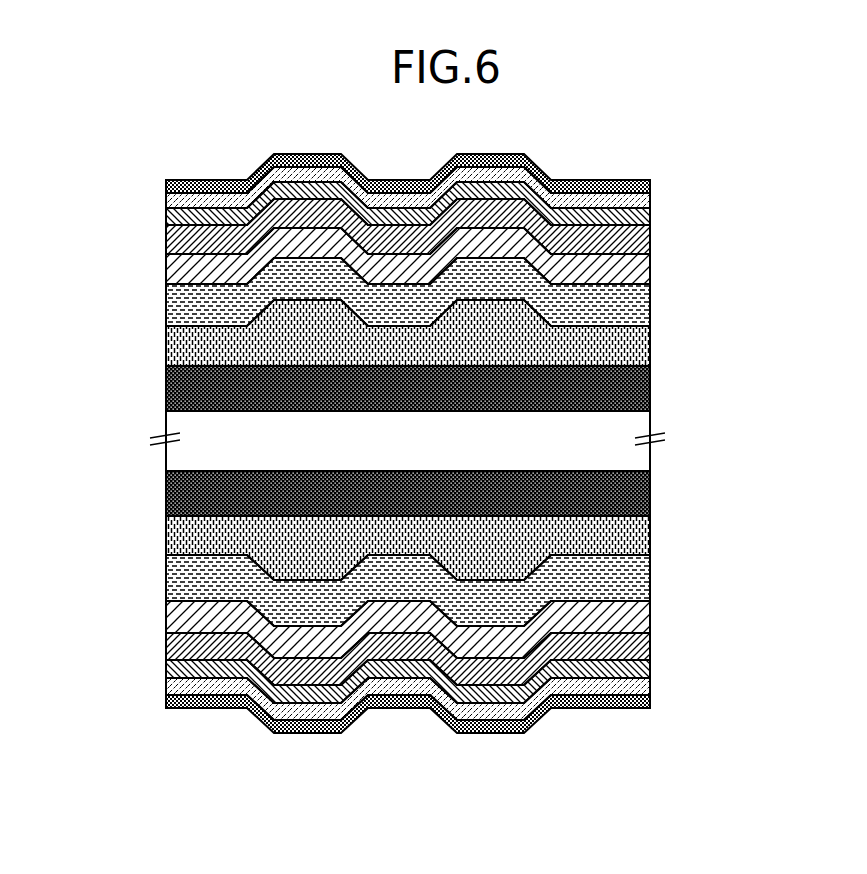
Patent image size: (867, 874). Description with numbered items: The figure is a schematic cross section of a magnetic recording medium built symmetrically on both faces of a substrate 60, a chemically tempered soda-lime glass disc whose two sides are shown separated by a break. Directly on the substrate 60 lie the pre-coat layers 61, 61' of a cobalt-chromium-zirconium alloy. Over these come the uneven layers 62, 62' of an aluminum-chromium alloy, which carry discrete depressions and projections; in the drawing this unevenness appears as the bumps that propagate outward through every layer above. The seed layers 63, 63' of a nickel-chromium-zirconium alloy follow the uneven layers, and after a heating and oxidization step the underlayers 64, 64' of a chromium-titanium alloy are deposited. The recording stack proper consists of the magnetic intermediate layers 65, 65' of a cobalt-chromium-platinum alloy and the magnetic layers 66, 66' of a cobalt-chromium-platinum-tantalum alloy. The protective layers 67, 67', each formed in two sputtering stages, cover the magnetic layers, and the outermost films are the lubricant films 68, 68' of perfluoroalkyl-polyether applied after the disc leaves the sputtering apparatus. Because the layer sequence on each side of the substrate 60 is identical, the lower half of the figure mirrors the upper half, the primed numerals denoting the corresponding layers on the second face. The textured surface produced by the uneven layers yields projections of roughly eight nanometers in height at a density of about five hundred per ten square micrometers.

The substrate 60 is at (642, 425).
The pre-coat layer 61 is at (356, 383).
The uneven layer 62 is at (461, 333).
The seed layer 63 is at (356, 292).
The underlayer 64 is at (461, 256).
The magnetic intermediate layer 65 is at (356, 226).
The magnetic layer 66 is at (461, 203).
The protective layer 67 is at (356, 187).
The lubricant film 68 is at (461, 171).
The pre-coat layer 61' is at (353, 487).
The uneven layer 62' is at (464, 541).
The seed layer 63' is at (353, 585).
The underlayer 64' is at (464, 620).
The magnetic intermediate layer 65' is at (353, 649).
The magnetic layer 66' is at (464, 670).
The protective layer 67' is at (353, 687).
The lubricant film 68' is at (464, 700).